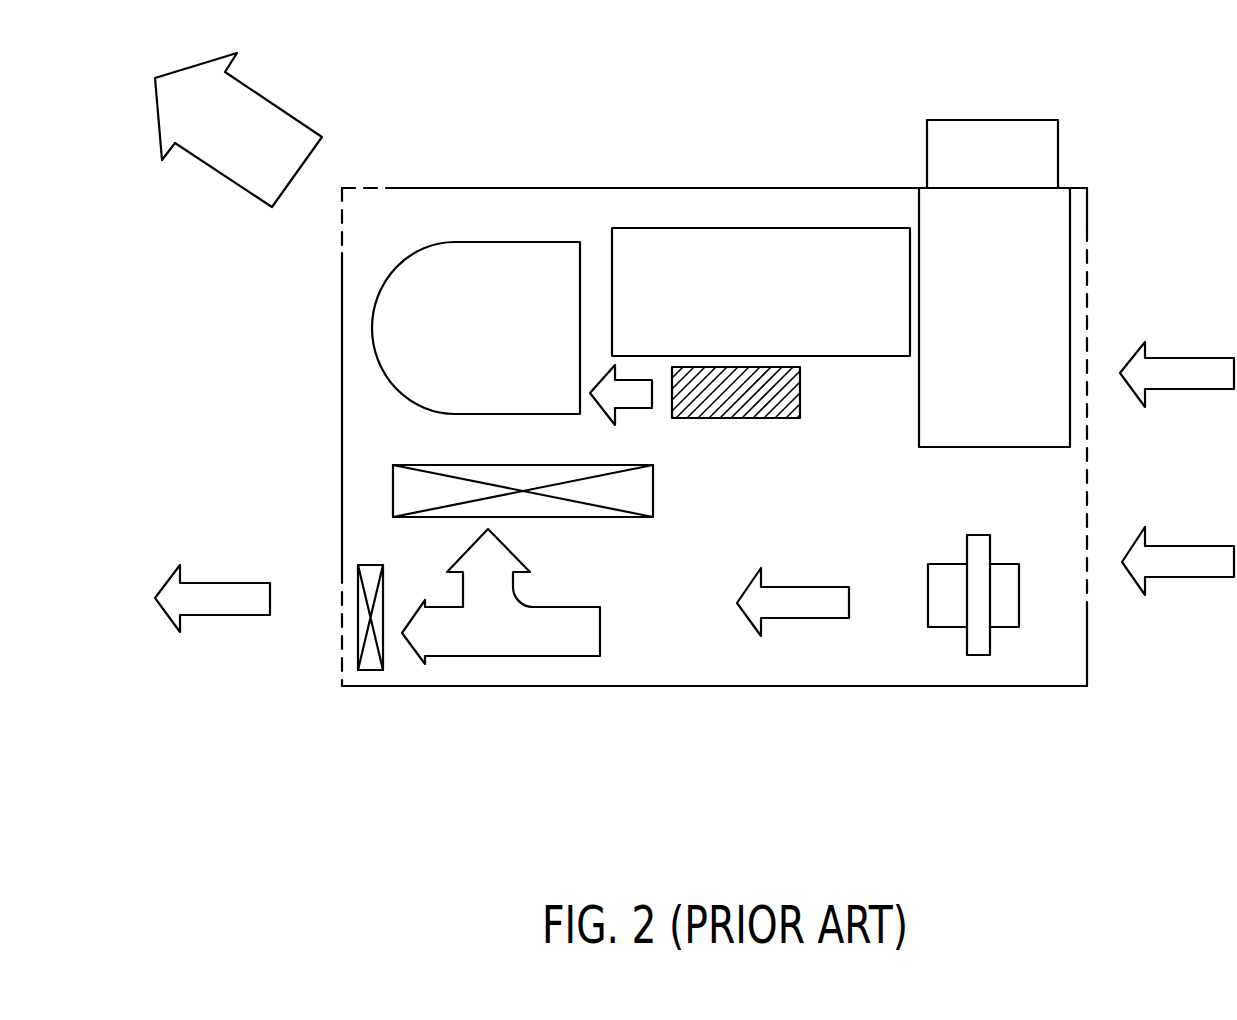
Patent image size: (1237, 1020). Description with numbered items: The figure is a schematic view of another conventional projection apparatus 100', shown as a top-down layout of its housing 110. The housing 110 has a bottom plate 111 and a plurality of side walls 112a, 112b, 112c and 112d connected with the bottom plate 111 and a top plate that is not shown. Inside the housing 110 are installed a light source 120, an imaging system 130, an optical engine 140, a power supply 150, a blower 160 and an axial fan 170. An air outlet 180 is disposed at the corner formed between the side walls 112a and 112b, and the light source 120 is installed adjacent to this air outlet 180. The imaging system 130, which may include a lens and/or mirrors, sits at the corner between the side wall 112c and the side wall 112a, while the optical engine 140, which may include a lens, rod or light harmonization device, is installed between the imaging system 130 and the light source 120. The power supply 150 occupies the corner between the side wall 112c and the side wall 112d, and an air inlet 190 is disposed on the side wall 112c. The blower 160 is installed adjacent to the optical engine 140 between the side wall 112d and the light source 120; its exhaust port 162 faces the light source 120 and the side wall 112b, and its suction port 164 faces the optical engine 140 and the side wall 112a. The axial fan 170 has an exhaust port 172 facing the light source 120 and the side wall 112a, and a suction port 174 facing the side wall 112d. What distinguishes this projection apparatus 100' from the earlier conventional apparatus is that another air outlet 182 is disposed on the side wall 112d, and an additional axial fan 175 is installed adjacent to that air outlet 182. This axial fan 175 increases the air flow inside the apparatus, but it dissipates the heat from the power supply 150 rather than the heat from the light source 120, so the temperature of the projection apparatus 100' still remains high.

The projection apparatus 100' is at (1084, 772).
The housing 110 is at (711, 434).
The bottom plate 111 is at (500, 670).
The side wall 112a is at (872, 187).
The side wall 112b is at (341, 333).
The side wall 112c is at (1090, 222).
The side wall 112d is at (753, 688).
The light source 120 is at (545, 250).
The imaging system 130 is at (1058, 232).
The optical engine 140 is at (643, 238).
The power supply 150 is at (949, 616).
The blower 160 is at (733, 267).
The exhaust port 162 is at (683, 398).
The suction port 164 is at (768, 365).
The axial fan 170 is at (473, 601).
The exhaust port 172 is at (418, 462).
The suction port 174 is at (418, 519).
The axial fan 175 is at (373, 663).
The air outlet 180 is at (341, 228).
The air outlet 182 is at (340, 640).
The air inlet 190 is at (1090, 342).